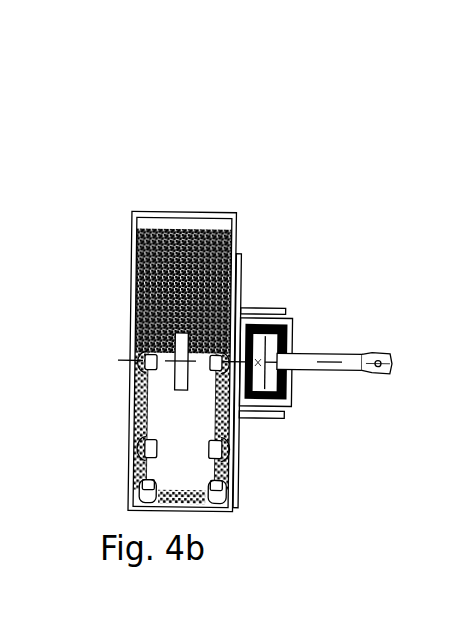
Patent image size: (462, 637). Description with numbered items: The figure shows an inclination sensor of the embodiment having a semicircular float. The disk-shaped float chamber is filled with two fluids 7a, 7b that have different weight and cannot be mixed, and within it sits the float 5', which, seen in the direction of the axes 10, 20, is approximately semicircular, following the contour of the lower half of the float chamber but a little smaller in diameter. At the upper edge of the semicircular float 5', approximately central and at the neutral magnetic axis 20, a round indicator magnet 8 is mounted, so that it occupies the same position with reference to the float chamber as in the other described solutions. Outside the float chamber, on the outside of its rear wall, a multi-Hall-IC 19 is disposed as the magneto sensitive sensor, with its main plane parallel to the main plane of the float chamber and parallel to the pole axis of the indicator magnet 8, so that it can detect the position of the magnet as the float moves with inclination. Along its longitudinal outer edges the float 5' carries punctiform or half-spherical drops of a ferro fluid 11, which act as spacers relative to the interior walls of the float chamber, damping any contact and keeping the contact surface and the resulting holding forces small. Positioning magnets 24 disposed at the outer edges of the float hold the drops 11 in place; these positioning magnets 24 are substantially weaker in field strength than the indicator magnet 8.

The fluid 7a is at (128, 348).
The fluid 7b is at (166, 228).
The indicator magnet 8 is at (187, 334).
The axis 10 is at (118, 360).
The drops of ferro fluid 11 is at (233, 468).
The multi-Hall-IC 19 is at (262, 320).
The neutral magnetic axis 20 is at (431, 360).
The positioning magnets 24 is at (133, 492).
The float 5' is at (181, 422).